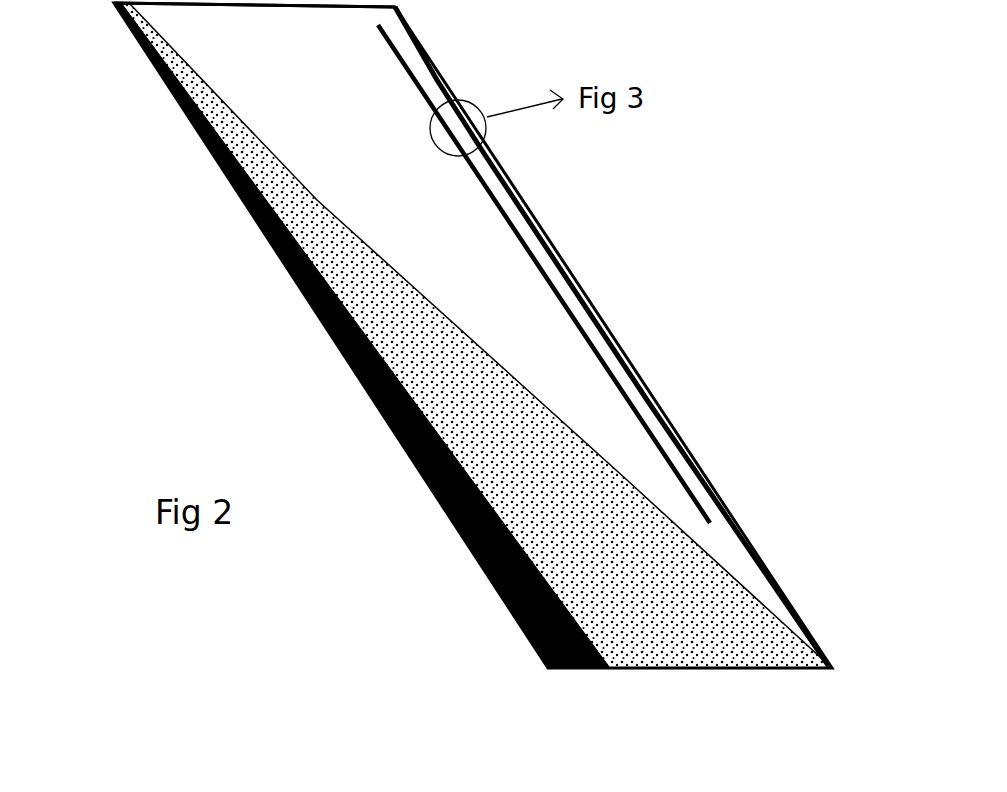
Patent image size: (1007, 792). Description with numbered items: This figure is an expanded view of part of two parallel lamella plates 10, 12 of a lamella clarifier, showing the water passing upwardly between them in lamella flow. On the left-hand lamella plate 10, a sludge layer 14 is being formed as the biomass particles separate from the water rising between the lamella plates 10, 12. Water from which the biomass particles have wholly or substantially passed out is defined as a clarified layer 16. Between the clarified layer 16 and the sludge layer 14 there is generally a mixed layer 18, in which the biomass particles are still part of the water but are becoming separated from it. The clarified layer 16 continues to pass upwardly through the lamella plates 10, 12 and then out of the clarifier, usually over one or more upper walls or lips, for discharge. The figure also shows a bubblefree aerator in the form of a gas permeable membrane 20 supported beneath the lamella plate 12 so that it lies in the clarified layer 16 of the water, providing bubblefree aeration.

The lamella plate 10 is at (152, 69).
The lamella plate 12 is at (574, 277).
The sludge layer 14 is at (556, 575).
The clarified layer 16 is at (465, 237).
The mixed layer 18 is at (552, 430).
The gas permeable membrane 20 is at (400, 81).